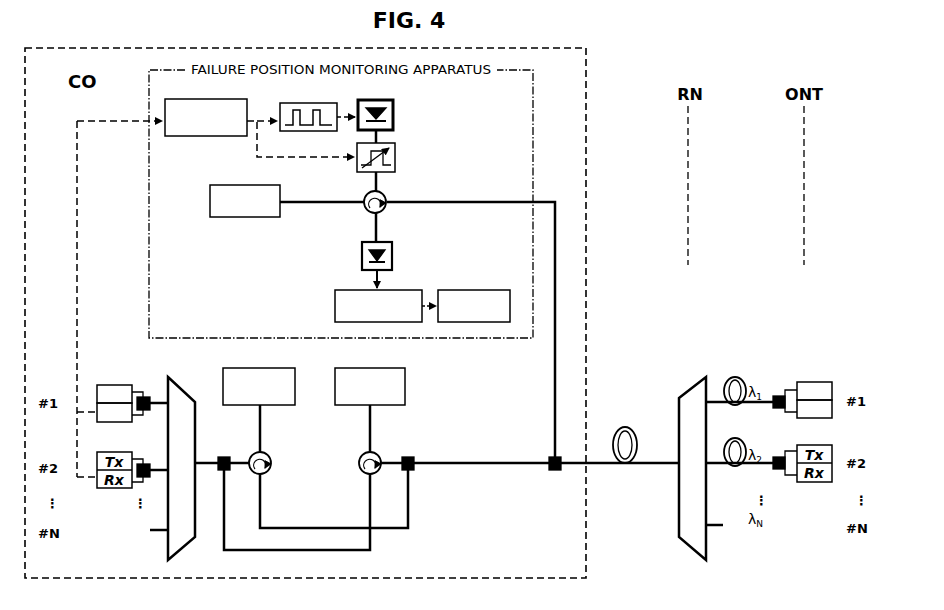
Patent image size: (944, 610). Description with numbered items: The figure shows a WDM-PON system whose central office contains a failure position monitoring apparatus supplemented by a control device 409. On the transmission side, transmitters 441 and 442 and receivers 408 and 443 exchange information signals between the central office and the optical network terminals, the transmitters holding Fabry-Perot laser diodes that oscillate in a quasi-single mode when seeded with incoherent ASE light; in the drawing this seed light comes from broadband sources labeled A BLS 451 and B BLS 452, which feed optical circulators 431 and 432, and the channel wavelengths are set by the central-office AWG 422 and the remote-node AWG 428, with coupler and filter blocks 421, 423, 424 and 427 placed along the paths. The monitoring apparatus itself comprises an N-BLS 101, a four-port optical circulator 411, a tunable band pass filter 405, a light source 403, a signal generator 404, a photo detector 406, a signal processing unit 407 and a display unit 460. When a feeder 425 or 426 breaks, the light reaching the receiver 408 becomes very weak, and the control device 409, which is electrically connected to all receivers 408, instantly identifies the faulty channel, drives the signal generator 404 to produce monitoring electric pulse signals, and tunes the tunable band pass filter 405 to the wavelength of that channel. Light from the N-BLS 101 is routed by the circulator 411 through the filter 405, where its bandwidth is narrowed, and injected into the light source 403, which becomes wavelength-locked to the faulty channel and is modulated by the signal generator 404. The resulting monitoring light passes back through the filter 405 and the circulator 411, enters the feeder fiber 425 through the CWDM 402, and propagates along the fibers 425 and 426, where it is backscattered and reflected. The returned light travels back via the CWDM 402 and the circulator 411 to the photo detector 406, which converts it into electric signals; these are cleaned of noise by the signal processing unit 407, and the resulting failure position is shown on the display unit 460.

The N-BLS 101 is at (227, 217).
The CWDM 402 is at (556, 470).
The light source 403 is at (395, 119).
The signal generator 404 is at (284, 105).
The tunable band pass filter 405 is at (396, 158).
The photo detector 406 is at (393, 262).
The signal processing unit 407 is at (335, 307).
The receiver 408 is at (124, 422).
The control device 409 is at (214, 137).
The four-port optical circulator 411 is at (380, 212).
The WDM filter 421 is at (144, 396).
The arrayed waveguide grating (CO) 422 is at (185, 392).
The WDM coupler 423 is at (221, 472).
The WDM coupler 424 is at (406, 456).
The feeder fiber 425 is at (624, 466).
The feeder 426 is at (726, 381).
The WDM filter 427 is at (776, 395).
The arrayed waveguide grating (RN) 428 is at (679, 396).
The optical circulator A 431 is at (269, 455).
The optical circulator B 432 is at (355, 463).
The optical transmitter (Tx) of CO transceiver 441 is at (106, 385).
The optical transmitter (Tx) of ONT 442 is at (815, 382).
The optical receiver (Rx) of ONT 443 is at (832, 414).
The A-band broadband light source (A BLS) 451 is at (239, 376).
The B-band broadband light source (B BLS) 452 is at (343, 376).
The display unit 460 is at (482, 292).